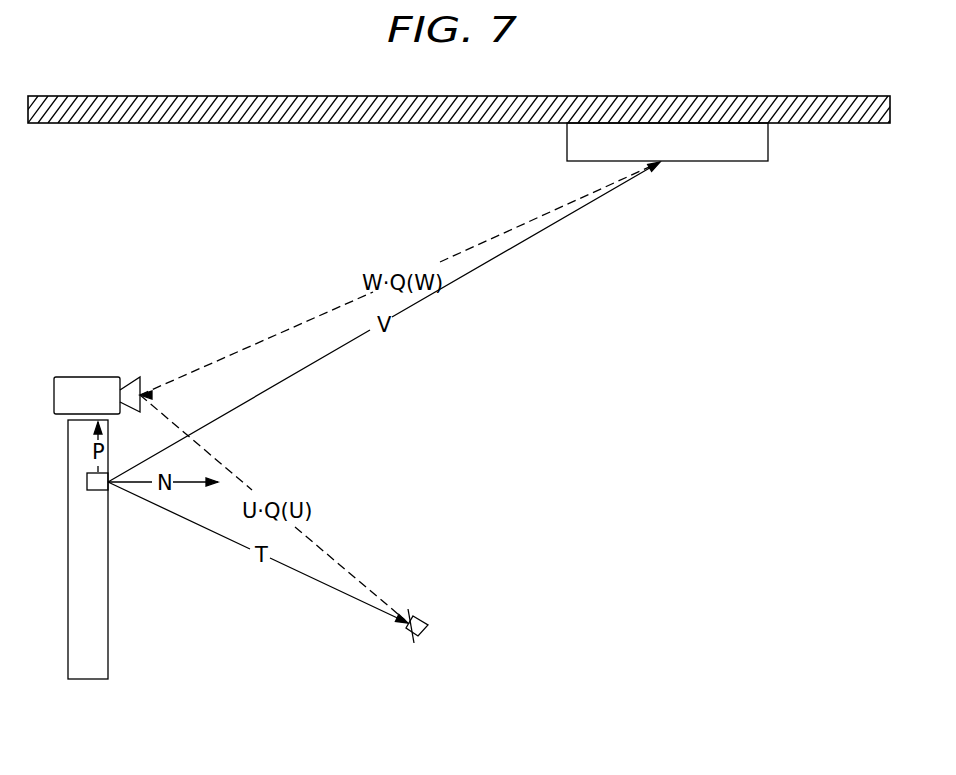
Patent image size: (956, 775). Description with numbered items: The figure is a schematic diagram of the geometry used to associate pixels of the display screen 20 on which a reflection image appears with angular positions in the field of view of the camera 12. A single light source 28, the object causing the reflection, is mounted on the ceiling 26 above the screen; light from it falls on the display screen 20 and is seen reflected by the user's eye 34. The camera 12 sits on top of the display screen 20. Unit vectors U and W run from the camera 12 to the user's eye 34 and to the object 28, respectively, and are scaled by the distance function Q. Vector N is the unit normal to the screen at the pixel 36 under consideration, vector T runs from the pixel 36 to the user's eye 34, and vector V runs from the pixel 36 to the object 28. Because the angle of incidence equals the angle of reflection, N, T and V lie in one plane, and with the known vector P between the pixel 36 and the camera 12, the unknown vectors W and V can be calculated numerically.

The ceiling 26 is at (170, 124).
The light source 28 is at (768, 140).
The camera 12 is at (90, 377).
The display screen 20 is at (108, 645).
The pixel 36 is at (98, 491).
The user's eye 34 is at (428, 632).